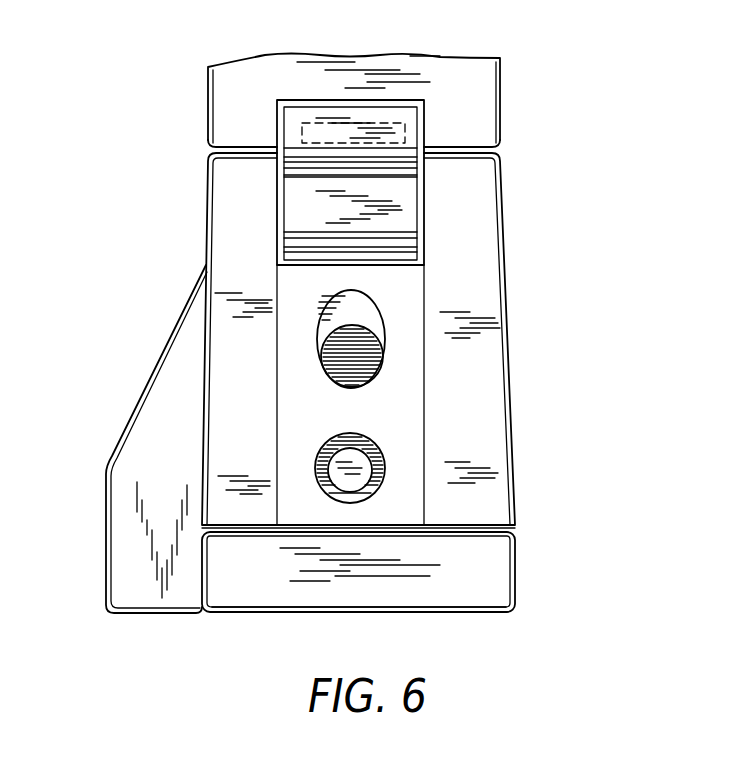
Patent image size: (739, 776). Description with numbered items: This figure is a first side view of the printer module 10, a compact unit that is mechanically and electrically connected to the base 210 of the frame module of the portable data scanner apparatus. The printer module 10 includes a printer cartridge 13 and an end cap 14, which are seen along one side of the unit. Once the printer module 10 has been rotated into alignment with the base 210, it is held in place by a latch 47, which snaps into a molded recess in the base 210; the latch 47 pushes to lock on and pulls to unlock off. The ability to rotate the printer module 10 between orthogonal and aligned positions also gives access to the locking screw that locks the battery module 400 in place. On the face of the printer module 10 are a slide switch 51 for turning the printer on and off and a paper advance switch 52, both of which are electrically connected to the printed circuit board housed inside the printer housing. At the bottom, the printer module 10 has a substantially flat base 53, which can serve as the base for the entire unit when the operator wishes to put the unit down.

The printer module 10 is at (146, 260).
The battery module 400 is at (485, 68).
The base 210 is at (425, 130).
The latch 47 is at (407, 207).
The slide switch 51 is at (356, 372).
The paper advance switch 52 is at (360, 478).
The printer cartridge 13 is at (118, 567).
The end cap 14 is at (508, 577).
The flat base 53 is at (283, 613).